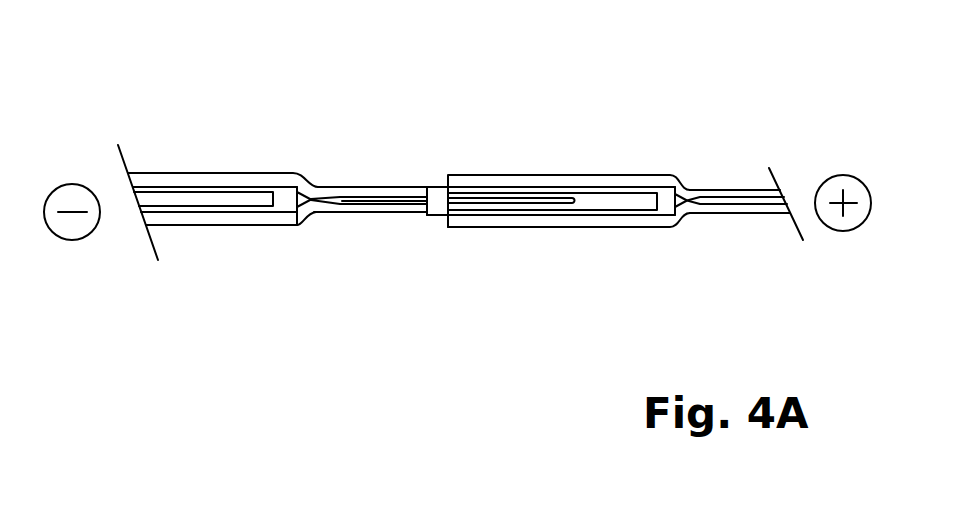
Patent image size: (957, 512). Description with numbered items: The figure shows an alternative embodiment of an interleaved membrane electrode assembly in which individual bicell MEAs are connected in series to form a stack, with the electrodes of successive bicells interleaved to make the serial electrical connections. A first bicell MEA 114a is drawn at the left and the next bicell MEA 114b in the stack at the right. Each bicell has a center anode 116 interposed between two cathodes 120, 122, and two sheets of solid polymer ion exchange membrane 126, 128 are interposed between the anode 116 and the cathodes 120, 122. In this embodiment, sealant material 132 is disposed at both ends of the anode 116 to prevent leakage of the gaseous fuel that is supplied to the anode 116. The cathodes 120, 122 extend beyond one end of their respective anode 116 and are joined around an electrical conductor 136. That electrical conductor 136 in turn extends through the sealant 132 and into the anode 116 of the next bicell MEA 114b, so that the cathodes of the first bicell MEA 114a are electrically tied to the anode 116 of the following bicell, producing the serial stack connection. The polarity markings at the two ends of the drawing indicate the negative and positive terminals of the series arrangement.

The bicell MEA 114a is at (140, 284).
The next bicell MEA 114b is at (650, 247).
The center anode 116 is at (250, 195).
The cathode 120 is at (180, 173).
The cathode 122 is at (253, 225).
The solid polymer ion exchange membrane 126 is at (145, 187).
The solid polymer ion exchange membrane 128 is at (163, 212).
The sealant material 132 is at (296, 213).
The electrical conductor 136 is at (373, 207).